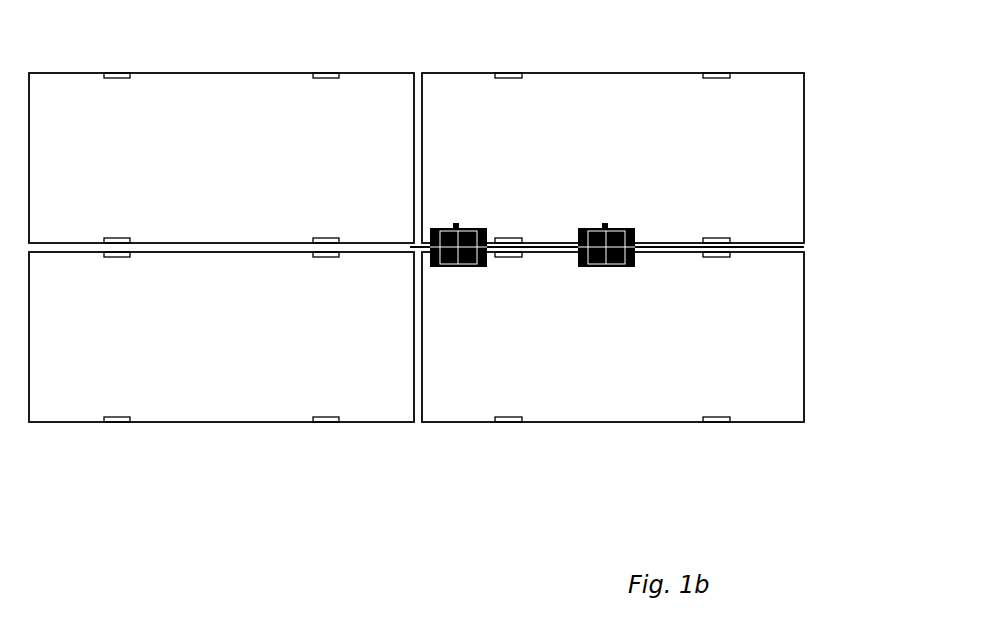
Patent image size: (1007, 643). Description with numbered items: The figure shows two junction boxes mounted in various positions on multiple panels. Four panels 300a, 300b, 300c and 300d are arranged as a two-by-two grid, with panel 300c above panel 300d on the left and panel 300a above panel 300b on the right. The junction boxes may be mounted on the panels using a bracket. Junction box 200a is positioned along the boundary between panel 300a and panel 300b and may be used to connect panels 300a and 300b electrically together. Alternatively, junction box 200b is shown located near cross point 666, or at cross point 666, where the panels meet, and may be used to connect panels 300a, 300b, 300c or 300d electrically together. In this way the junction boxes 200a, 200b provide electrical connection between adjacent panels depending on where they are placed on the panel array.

The panel 300a is at (557, 103).
The panel 300b is at (562, 382).
The panel 300c is at (195, 112).
The panel 300d is at (153, 381).
The junction box 200a is at (623, 222).
The junction box 200b is at (475, 222).
The cross point 666 is at (415, 248).